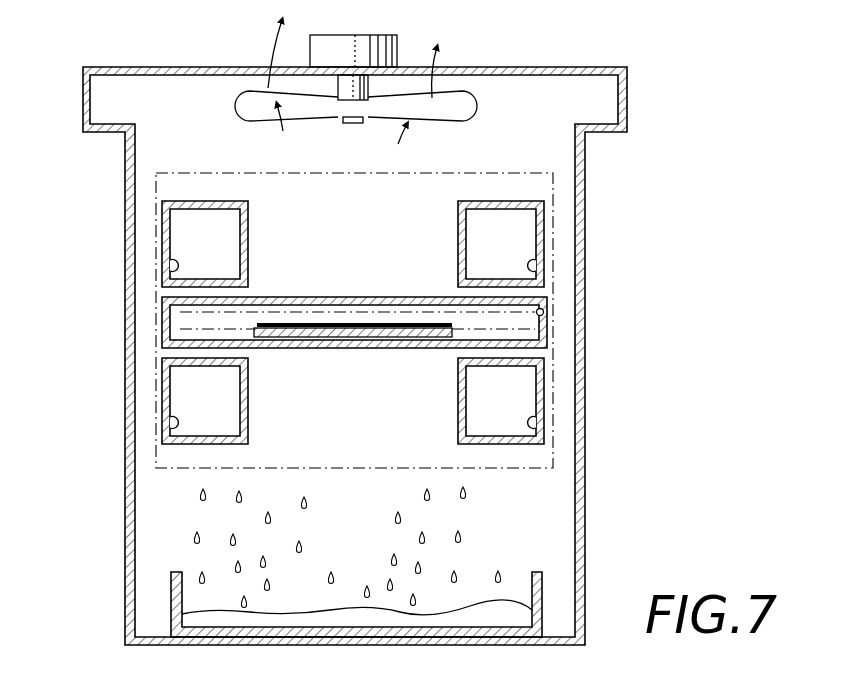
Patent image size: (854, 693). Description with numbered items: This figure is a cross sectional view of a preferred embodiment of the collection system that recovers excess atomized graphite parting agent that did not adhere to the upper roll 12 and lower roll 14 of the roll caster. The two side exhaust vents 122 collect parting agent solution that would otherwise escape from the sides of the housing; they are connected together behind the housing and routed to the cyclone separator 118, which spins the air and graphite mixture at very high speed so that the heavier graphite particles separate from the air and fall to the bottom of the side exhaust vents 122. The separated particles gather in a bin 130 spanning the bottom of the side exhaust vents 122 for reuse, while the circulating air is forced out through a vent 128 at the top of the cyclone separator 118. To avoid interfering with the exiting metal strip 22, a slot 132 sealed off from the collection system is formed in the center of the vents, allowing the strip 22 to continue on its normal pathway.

The upper roll 12 is at (351, 322).
The lower roll 14 is at (157, 455).
The metal strip 22 is at (368, 324).
The cyclone separator 118 is at (592, 101).
The side exhaust vents 122 is at (172, 273).
The vent 128 is at (270, 72).
The bin 130 is at (175, 601).
The slot 132 is at (409, 302).